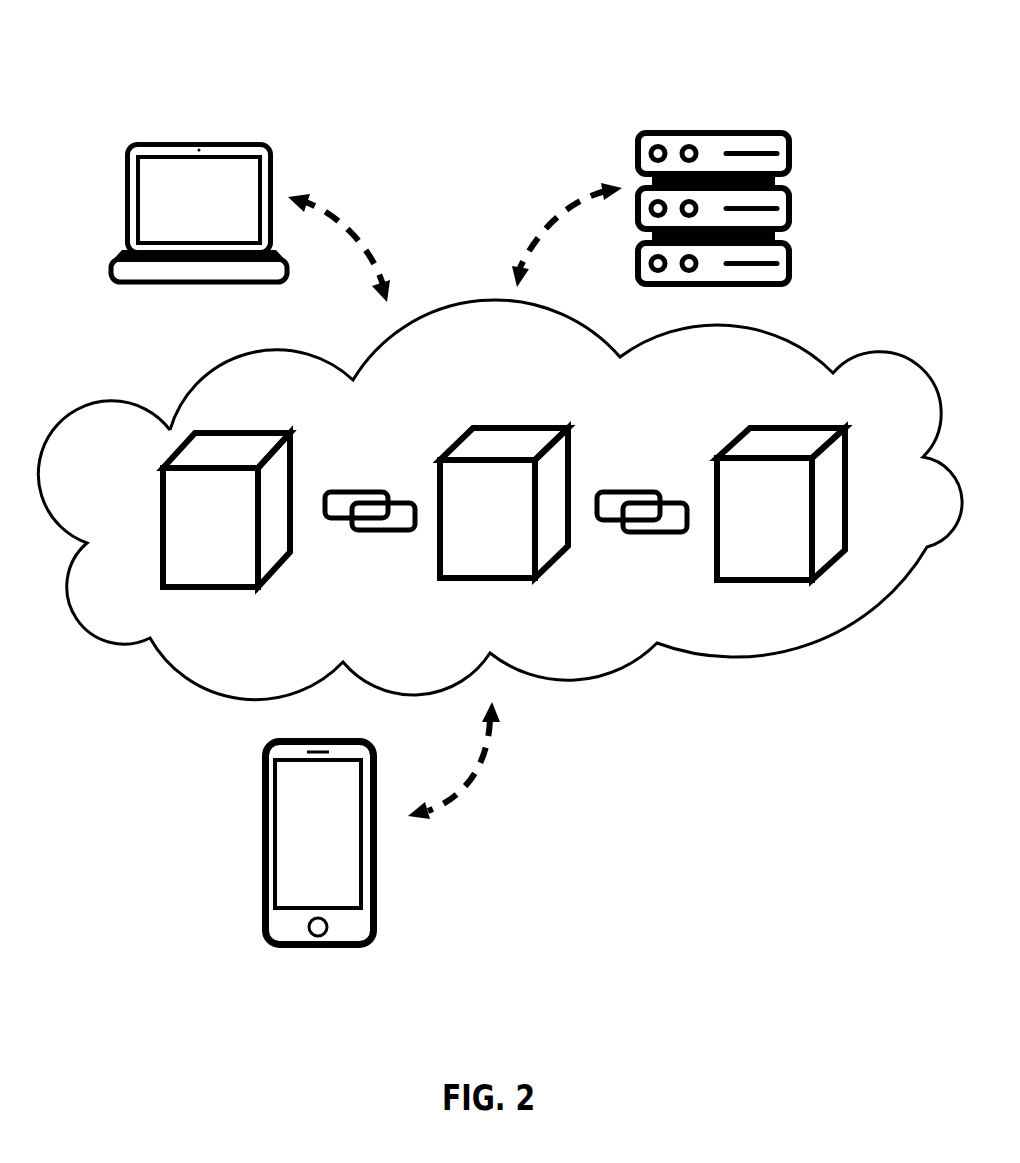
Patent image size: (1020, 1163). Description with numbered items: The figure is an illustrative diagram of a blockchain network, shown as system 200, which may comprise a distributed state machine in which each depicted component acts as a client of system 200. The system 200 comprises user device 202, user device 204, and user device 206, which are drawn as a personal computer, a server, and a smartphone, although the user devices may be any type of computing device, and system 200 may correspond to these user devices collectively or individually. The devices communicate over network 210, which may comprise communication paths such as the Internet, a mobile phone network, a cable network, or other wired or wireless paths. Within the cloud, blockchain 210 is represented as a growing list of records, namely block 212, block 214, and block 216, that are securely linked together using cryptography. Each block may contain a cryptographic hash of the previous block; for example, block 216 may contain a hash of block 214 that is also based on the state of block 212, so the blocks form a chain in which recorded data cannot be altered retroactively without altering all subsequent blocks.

The system 200 is at (500, 32).
The user device 202 is at (238, 189).
The user device 204 is at (800, 234).
The user device 206 is at (334, 865).
The blockchain / network 210 is at (503, 394).
The block 212 is at (215, 556).
The block 214 is at (504, 553).
The block 216 is at (778, 444).